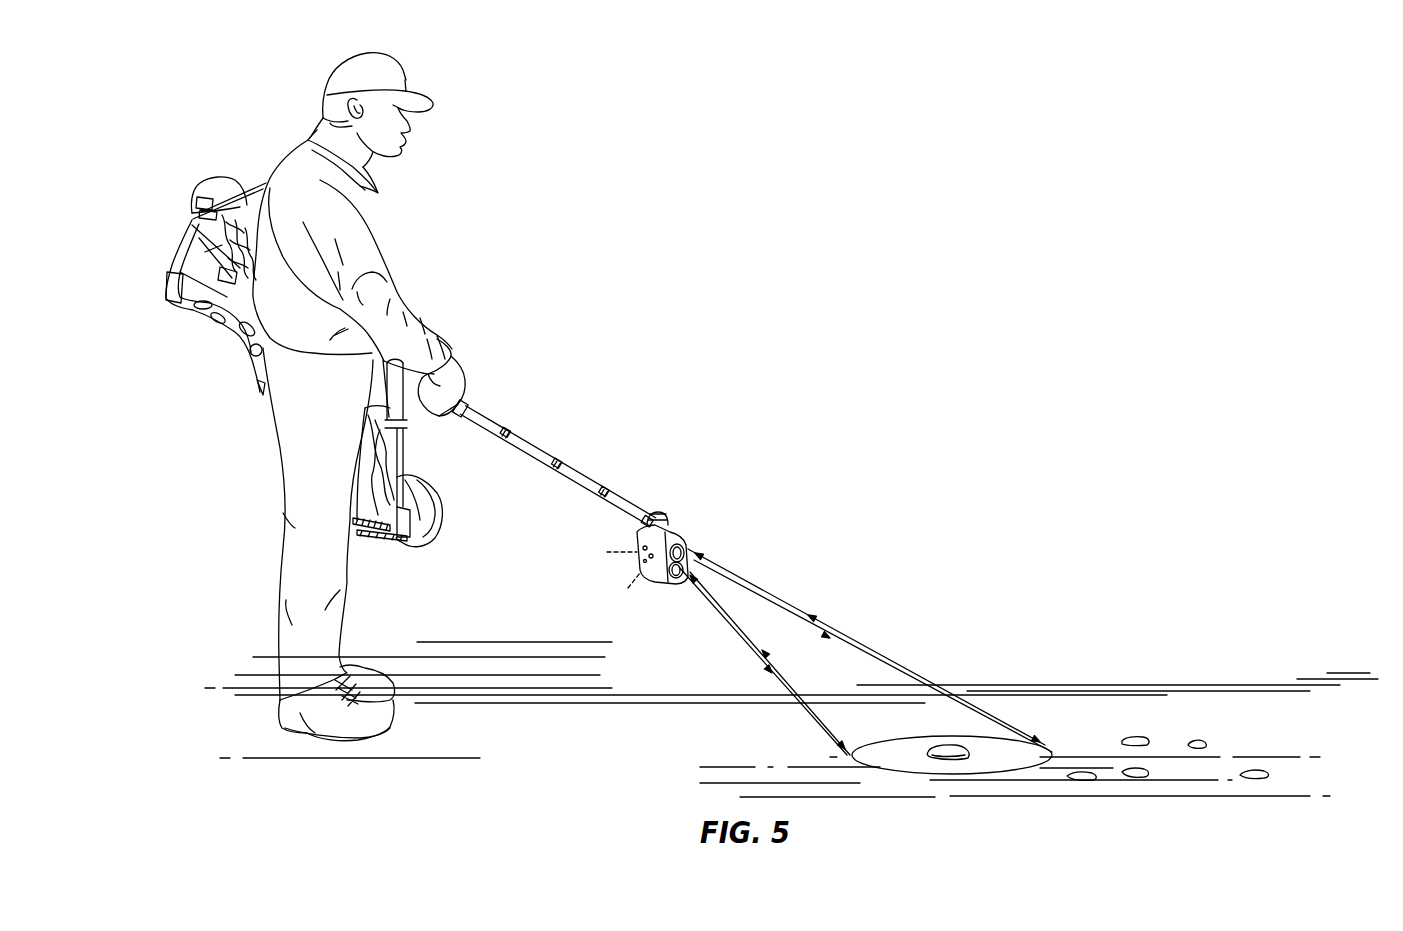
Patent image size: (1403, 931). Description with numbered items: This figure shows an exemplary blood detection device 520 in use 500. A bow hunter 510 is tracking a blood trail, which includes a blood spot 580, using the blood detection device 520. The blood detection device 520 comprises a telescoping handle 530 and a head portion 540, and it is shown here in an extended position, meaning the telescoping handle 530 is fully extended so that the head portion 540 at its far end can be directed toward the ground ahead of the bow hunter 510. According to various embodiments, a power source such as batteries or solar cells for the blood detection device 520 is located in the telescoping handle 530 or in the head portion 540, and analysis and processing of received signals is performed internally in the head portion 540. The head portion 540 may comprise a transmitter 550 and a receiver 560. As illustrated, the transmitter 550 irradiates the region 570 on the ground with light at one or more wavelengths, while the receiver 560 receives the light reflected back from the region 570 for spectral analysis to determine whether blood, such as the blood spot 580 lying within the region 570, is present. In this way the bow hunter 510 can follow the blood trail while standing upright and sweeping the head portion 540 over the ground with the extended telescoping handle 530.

The blood detection device in use 500 is at (985, 198).
The bow hunter 510 is at (403, 78).
The blood detection device 520 is at (620, 457).
The telescoping handle 530 is at (525, 440).
The head portion 540 is at (675, 527).
The transmitter 550 is at (677, 580).
The receiver 560 is at (694, 552).
The region 570 is at (888, 749).
The blood spot 580 is at (948, 746).